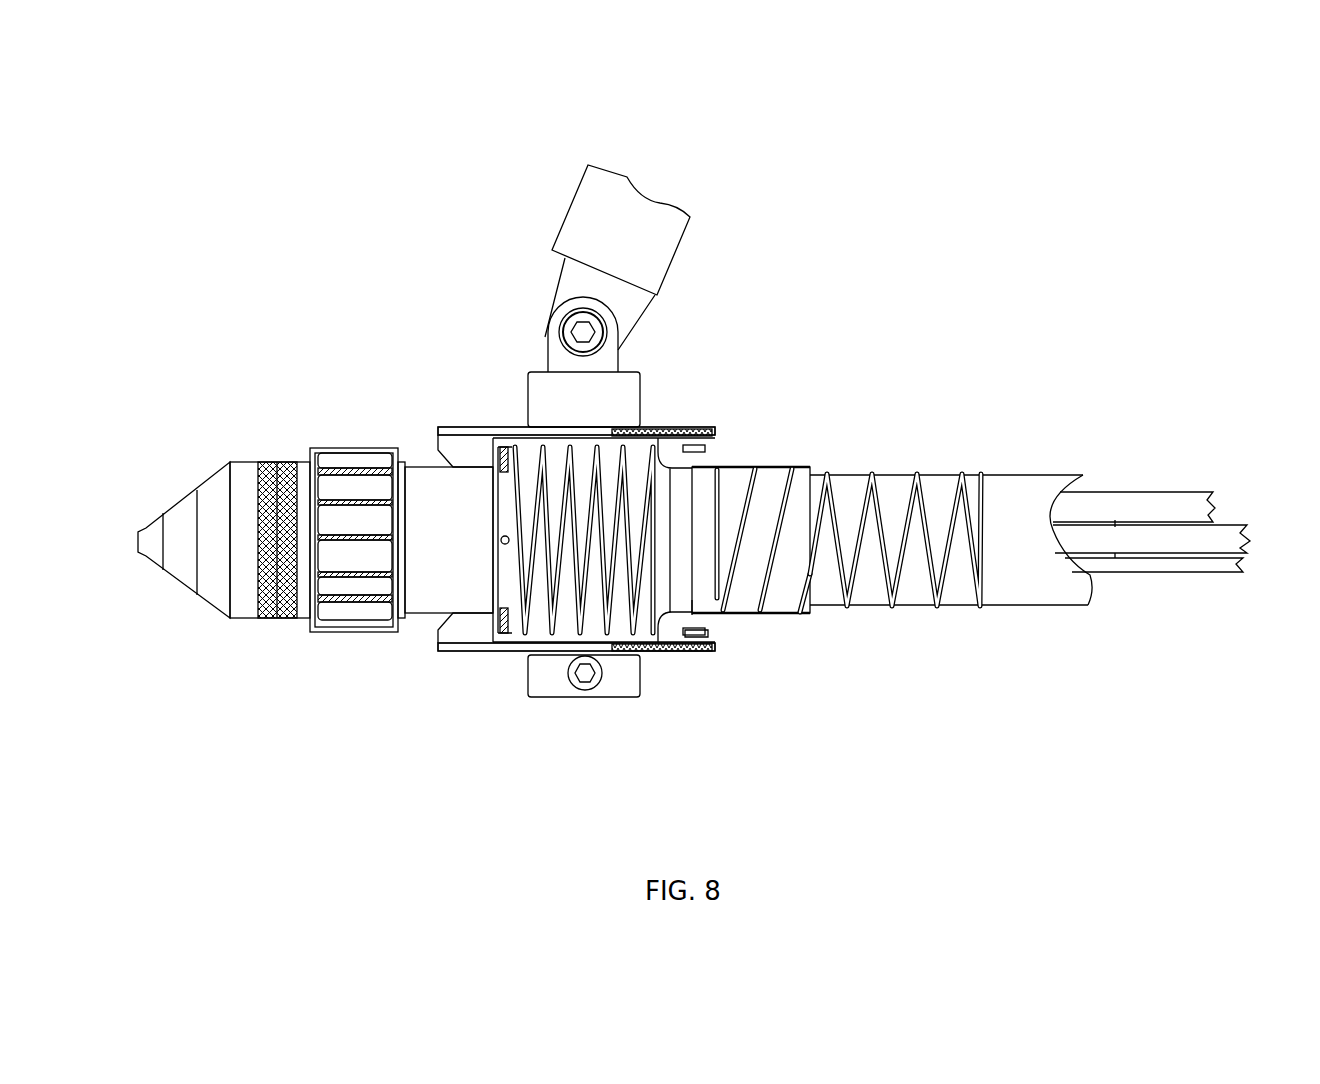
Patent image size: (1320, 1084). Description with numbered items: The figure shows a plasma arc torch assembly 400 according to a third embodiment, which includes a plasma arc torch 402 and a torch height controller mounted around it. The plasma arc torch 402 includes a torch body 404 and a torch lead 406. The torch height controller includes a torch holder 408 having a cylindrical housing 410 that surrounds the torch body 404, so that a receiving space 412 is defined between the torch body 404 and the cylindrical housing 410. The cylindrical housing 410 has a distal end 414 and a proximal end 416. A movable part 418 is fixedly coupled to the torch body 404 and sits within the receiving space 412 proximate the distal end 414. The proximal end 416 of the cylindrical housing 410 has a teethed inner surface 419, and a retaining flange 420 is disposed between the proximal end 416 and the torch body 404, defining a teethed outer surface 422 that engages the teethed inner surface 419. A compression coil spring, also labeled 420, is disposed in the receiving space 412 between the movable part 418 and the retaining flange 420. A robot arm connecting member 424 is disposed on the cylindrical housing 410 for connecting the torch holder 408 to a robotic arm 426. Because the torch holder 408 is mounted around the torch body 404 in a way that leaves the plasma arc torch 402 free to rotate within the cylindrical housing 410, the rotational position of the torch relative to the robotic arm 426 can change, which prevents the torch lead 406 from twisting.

The plasma arc torch assembly 400 is at (960, 140).
The plasma arc torch 402 is at (360, 642).
The torch body 404 is at (430, 598).
The torch lead 406 is at (1025, 593).
The torch holder 408 is at (660, 397).
The cylindrical housing 410 is at (473, 425).
The receiving space 412 is at (640, 450).
The distal end 414 is at (435, 418).
The proximal end 416 is at (702, 658).
The movable part 418 is at (505, 634).
The teethed inner surface 419 is at (717, 637).
The retaining flange 420 is at (573, 465).
The teethed outer surface 422 is at (673, 643).
The robot arm connecting member 424 is at (545, 383).
The robotic arm 426 is at (635, 190).